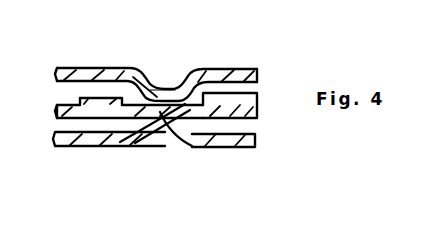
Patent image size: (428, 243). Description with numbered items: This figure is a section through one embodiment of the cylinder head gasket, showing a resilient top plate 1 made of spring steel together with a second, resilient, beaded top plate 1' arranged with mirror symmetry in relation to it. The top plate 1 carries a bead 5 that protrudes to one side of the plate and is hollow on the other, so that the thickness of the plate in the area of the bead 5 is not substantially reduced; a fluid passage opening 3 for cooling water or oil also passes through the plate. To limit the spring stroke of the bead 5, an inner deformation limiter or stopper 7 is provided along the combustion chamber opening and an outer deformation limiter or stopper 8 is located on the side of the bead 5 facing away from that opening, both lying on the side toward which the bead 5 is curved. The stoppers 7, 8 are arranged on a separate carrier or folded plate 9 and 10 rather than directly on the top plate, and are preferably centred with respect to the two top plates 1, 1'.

The top plate 1 is at (156, 50).
The second top plate 1' is at (154, 166).
The fluid passage openings 3 is at (3, 112).
The bead 5 is at (171, 84).
The inner deformation limiter or stopper 7 is at (252, 116).
The outer deformation limiter or stopper 8 is at (98, 112).
The carrier plate 9 is at (61, 114).
The folded plate 10 is at (190, 110).